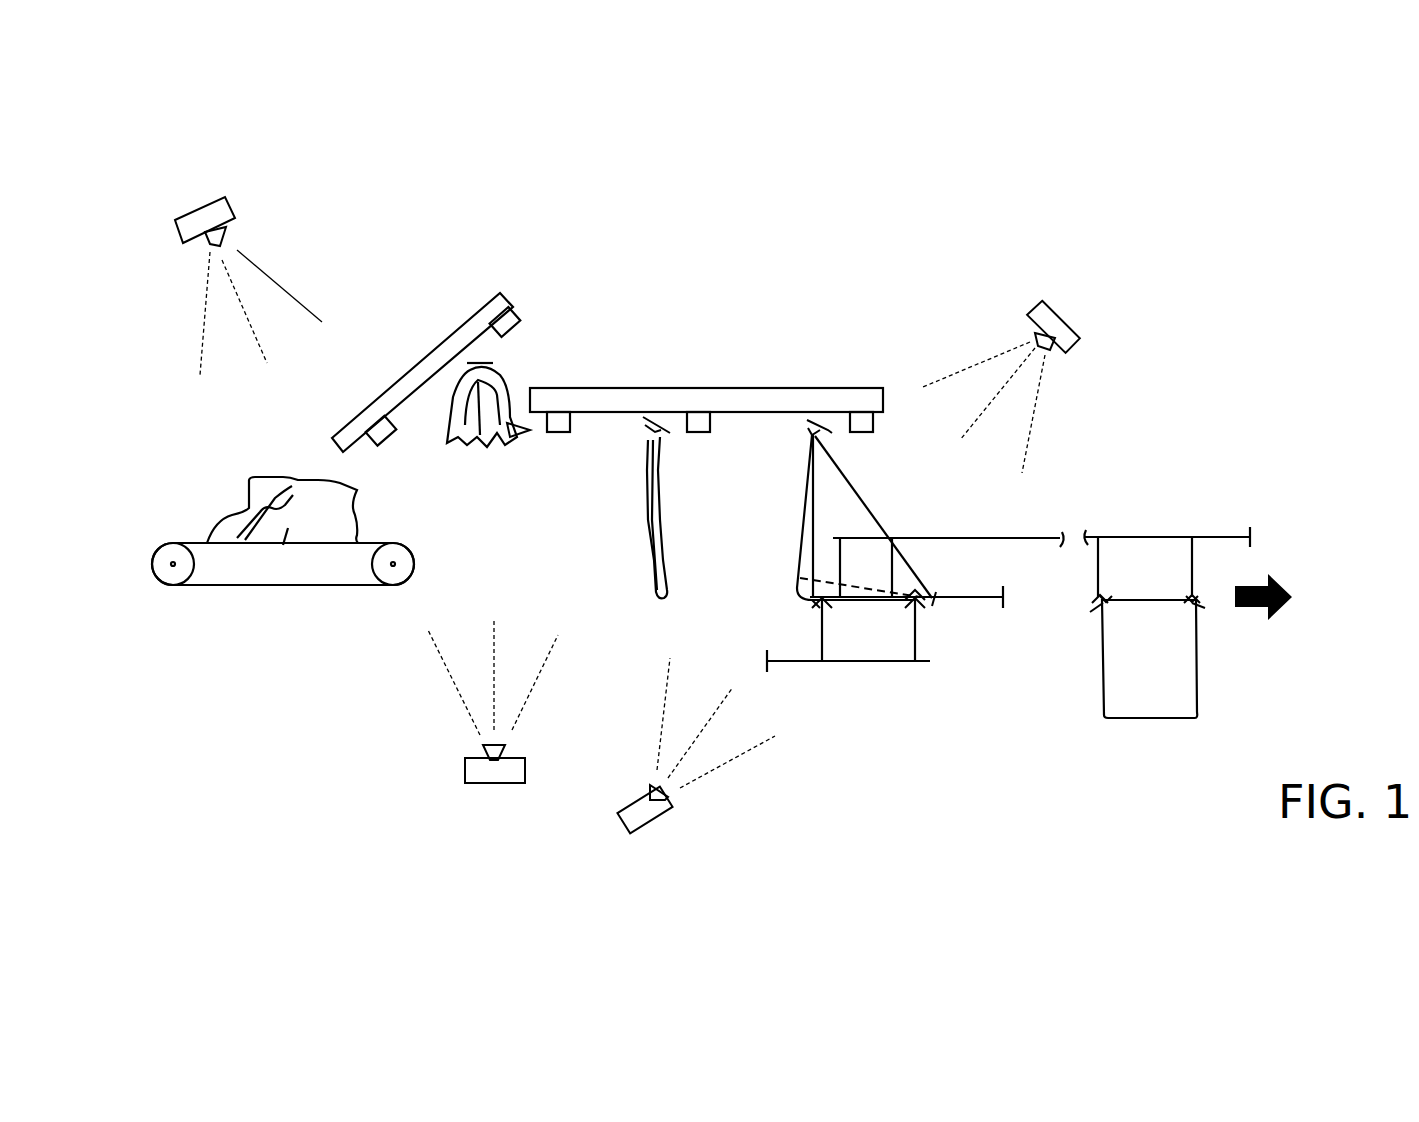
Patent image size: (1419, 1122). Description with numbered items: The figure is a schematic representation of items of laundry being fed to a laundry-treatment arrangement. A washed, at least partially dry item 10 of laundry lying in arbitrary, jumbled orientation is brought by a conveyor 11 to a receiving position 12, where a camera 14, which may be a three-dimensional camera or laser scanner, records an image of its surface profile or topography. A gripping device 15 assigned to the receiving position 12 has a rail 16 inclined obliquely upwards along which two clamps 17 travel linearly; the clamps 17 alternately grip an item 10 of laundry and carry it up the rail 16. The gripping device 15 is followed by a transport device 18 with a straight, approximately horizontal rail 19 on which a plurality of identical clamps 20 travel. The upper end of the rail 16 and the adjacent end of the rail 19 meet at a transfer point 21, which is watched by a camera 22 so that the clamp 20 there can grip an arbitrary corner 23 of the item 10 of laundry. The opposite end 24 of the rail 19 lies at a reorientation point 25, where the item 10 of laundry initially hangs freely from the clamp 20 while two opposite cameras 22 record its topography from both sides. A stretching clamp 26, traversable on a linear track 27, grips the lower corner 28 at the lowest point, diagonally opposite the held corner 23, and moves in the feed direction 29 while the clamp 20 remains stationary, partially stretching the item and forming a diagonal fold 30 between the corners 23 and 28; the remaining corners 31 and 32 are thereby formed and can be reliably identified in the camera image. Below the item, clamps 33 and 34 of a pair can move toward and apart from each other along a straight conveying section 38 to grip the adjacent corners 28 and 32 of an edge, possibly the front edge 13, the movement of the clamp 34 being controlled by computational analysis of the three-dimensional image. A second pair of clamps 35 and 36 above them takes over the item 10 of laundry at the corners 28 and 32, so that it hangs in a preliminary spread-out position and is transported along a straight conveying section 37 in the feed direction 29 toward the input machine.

The item of laundry 10 is at (230, 518).
The conveyor 11 is at (178, 562).
The receiving position 12 is at (320, 430).
The front edge 13 is at (870, 600).
The camera 14 is at (205, 215).
The gripping device 15 is at (425, 500).
The rail 16 is at (445, 350).
The clamps 17 is at (495, 360).
The transport device 18 is at (721, 330).
The rail 19 is at (785, 400).
The clamps 20 is at (525, 448).
The transfer point 21 is at (485, 470).
The camera 22 is at (1065, 325).
The corner 23 is at (500, 460).
The end of the rail 24 is at (878, 395).
The reorientation point 25 is at (960, 488).
The stretching clamp 26 is at (940, 610).
The linear track 27 is at (990, 605).
The corner 28 is at (660, 598).
The feed direction 29 is at (1268, 575).
The diagonal fold 30 is at (895, 525).
The corner 31 is at (800, 575).
The corner 32 is at (808, 598).
The clamp 33 is at (900, 610).
The clamp 34 is at (818, 605).
The clamp 35 is at (895, 612).
The clamp 36 is at (843, 612).
The conveying section 37 is at (1127, 530).
The conveying section 38 is at (787, 665).